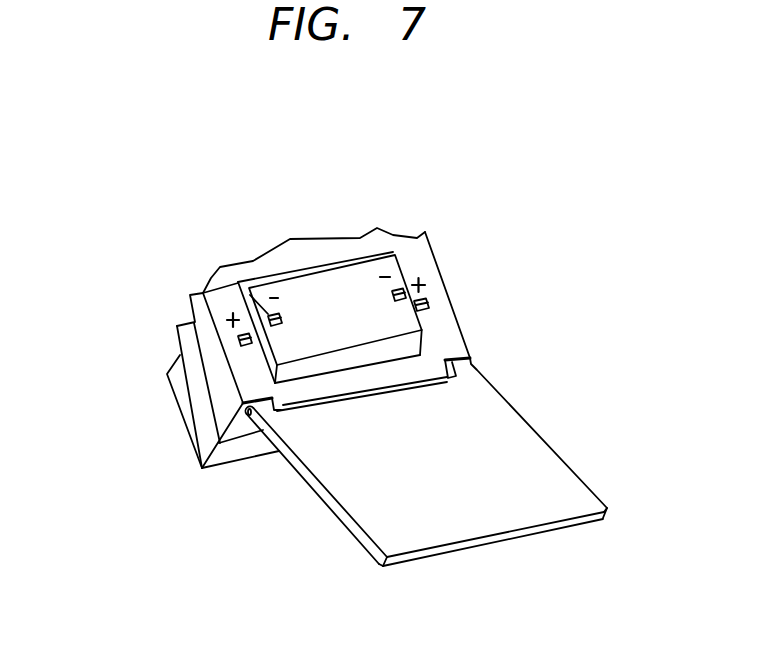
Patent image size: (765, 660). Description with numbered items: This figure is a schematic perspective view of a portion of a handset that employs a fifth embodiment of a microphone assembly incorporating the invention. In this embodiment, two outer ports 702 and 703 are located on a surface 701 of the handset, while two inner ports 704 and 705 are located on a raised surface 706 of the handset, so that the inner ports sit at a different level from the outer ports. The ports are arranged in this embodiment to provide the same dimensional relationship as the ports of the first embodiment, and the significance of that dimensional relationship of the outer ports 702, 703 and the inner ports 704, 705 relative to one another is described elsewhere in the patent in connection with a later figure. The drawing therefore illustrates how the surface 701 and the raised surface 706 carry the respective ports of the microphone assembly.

The surface 701 is at (450, 327).
The outer port 702 is at (421, 303).
The outer port 703 is at (242, 342).
The inner port 704 is at (405, 272).
The inner port 705 is at (238, 283).
The raised surface 706 is at (323, 280).